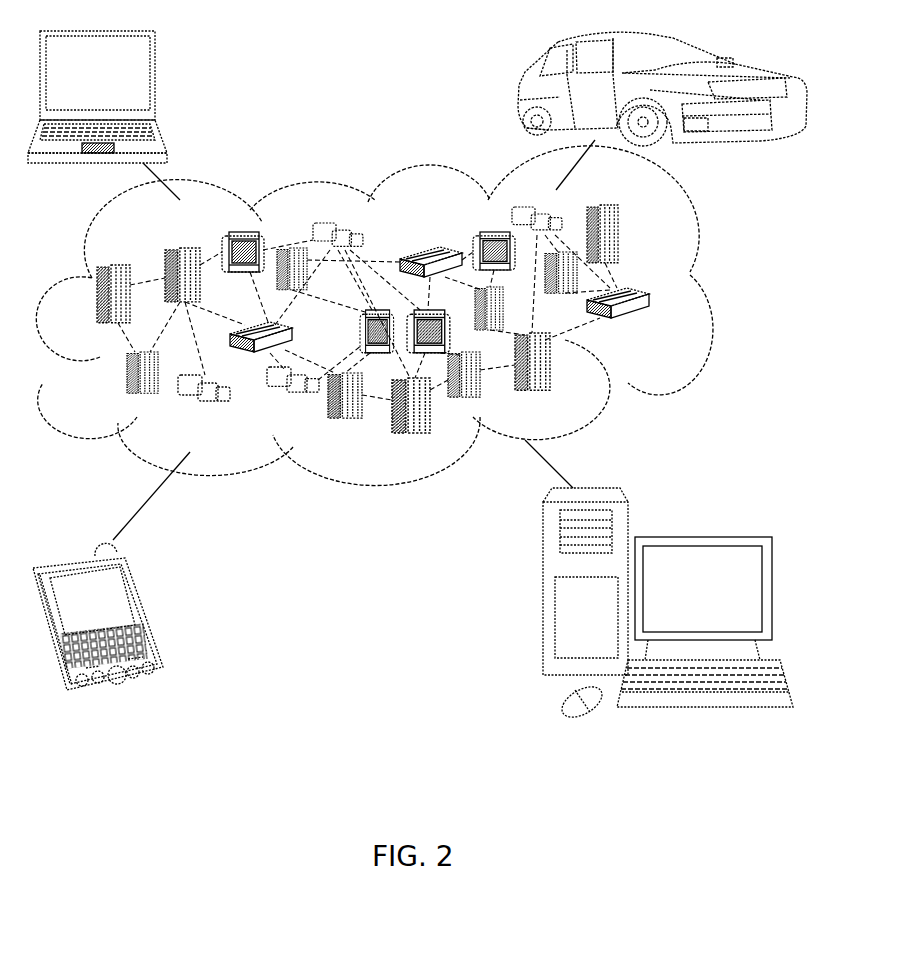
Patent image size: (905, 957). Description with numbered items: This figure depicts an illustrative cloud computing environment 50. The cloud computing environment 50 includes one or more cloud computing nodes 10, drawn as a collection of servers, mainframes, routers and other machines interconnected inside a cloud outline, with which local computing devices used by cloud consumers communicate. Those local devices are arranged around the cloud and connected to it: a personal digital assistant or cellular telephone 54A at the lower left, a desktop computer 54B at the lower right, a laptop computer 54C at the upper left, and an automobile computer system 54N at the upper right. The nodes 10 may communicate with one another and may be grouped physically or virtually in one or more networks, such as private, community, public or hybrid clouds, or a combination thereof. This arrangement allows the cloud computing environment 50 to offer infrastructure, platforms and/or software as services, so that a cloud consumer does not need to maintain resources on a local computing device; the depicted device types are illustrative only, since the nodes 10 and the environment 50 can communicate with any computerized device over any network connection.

The laptop computer 54C is at (153, 82).
The automobile computer system 54N is at (518, 93).
The personal digital assistant or cellular telephone 54A is at (147, 612).
The desktop computer 54B is at (702, 537).
The cloud computing environment 50 is at (700, 302).
The cloud computing node 10 is at (661, 327).